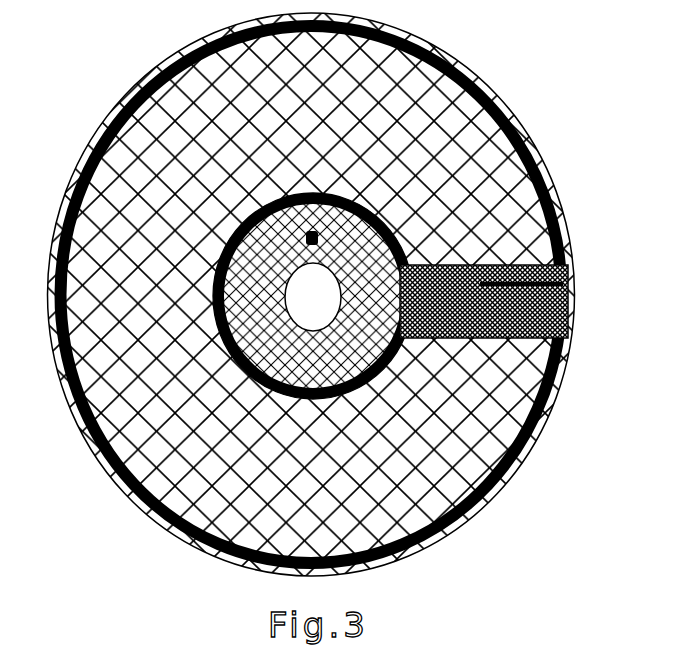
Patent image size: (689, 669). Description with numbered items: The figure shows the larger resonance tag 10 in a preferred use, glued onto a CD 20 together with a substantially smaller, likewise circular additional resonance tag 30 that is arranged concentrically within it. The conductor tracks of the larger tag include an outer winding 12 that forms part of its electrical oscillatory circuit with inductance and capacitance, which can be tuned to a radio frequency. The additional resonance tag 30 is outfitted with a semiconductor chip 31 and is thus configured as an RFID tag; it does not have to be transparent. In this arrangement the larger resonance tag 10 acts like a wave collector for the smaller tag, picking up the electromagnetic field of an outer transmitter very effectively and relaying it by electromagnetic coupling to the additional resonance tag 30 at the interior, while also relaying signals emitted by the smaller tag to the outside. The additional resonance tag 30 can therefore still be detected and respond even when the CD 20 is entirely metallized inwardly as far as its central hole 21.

The resonance tag 10 is at (312, 297).
The outer winding 12 is at (440, 503).
The CD 20 is at (540, 165).
The central hole 21 is at (294, 310).
The additional resonance tag 30 is at (382, 196).
The semiconductor chip 31 is at (306, 232).